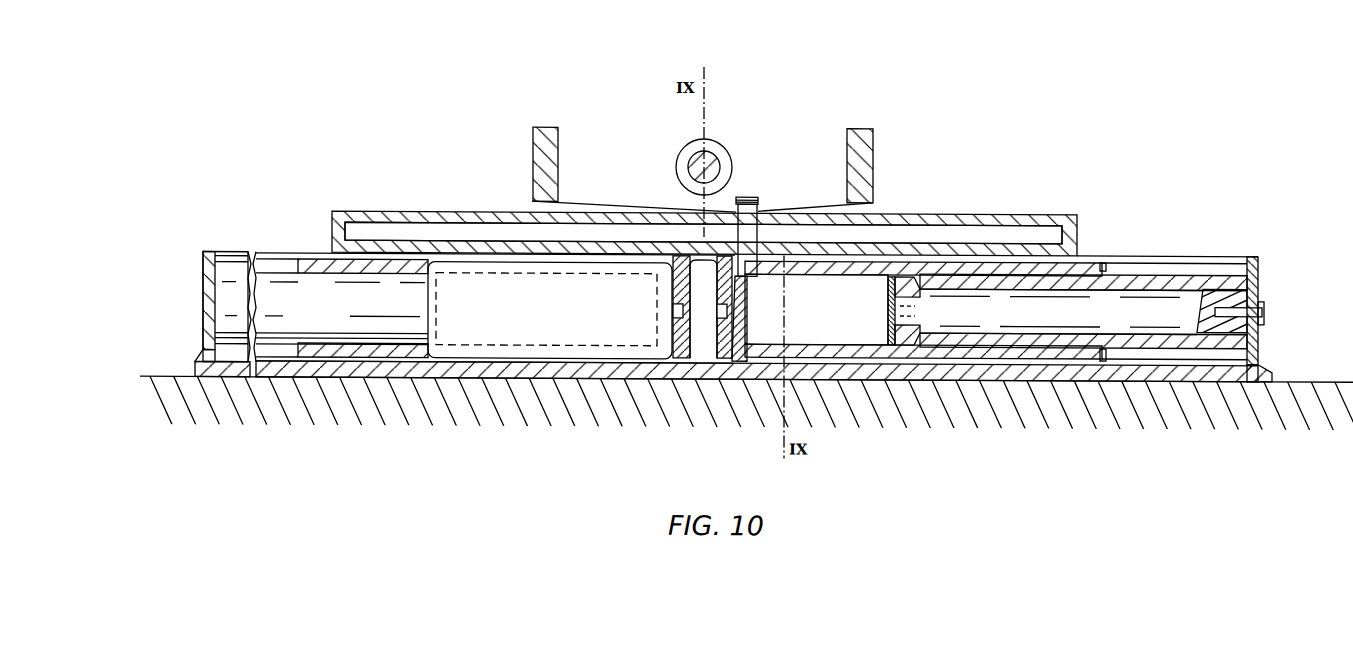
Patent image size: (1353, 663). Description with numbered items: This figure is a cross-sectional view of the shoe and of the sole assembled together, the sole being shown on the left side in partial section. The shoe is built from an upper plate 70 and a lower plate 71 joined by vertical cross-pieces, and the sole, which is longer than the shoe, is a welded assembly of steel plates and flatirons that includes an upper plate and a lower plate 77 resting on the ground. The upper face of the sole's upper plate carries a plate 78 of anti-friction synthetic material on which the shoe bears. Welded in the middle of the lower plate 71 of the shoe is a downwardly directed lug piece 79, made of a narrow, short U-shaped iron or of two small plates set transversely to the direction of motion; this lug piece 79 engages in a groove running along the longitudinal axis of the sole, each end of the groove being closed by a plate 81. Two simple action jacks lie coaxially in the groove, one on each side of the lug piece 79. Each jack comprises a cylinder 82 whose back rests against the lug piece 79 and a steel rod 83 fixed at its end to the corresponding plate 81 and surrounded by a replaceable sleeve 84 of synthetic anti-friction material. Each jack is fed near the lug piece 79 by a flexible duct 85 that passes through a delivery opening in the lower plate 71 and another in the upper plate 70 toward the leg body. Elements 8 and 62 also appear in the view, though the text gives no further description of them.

The foundation 8 is at (1283, 396).
The pin 62 is at (718, 167).
The upper plate 70 is at (930, 221).
The lower plate 71 is at (930, 252).
The lower plate 77 is at (1268, 372).
The plate 78 is at (278, 261).
The lug piece 79 is at (727, 361).
The plate 81 is at (1260, 282).
The cylinder 82 is at (826, 352).
The steel rod 83 is at (990, 315).
The replaceable sleeve 84 is at (1168, 342).
The flexible duct 85 is at (737, 194).